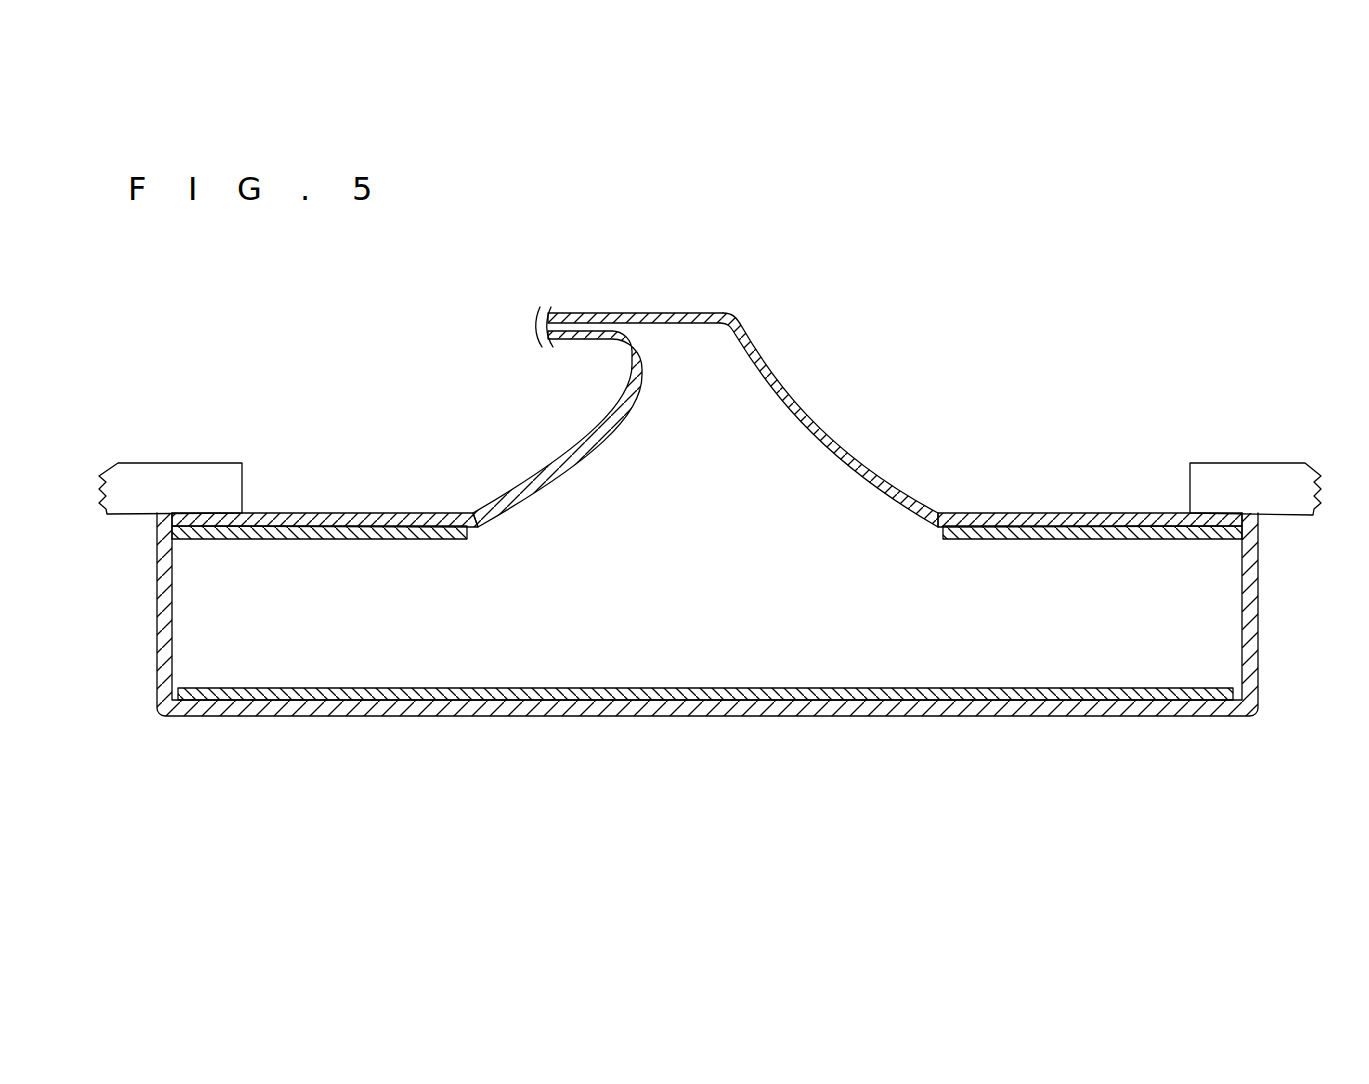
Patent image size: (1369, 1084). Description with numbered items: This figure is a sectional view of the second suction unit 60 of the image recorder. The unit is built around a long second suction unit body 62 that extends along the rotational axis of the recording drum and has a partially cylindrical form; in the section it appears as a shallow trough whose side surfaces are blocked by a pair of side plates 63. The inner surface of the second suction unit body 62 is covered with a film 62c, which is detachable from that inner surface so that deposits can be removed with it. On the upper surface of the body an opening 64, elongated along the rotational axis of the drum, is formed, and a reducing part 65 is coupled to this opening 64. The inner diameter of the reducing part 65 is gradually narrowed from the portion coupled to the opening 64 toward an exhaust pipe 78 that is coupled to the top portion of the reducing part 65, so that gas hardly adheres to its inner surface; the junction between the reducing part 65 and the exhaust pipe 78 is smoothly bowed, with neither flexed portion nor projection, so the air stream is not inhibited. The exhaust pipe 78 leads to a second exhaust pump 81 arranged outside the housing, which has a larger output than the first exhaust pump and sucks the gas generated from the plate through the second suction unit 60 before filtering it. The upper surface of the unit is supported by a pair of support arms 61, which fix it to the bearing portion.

The second suction unit 60 is at (1095, 413).
The support arms 61 is at (203, 463).
The second suction unit body 62 is at (930, 717).
The film 62c is at (310, 540).
The side plates 63 is at (157, 627).
The opening 64 is at (694, 533).
The reducing part 65 is at (810, 403).
The exhaust pipe 78 is at (600, 313).
The second exhaust pump 81 is at (537, 327).